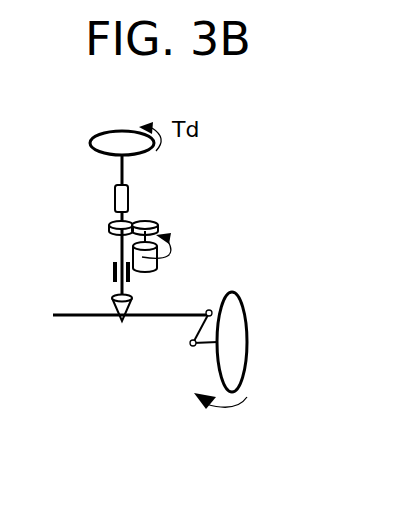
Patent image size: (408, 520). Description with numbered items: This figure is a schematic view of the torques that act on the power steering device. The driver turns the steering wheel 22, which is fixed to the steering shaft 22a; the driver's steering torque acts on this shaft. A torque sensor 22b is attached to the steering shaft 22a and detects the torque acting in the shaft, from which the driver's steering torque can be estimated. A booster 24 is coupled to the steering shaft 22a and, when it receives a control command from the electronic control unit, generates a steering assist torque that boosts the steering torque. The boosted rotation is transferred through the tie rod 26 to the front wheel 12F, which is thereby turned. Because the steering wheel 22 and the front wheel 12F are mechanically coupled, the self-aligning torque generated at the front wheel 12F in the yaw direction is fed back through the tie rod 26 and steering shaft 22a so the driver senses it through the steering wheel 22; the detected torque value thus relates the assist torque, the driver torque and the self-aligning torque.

The steering wheel 22 is at (92, 147).
The steering shaft 22a is at (124, 168).
The torque sensor 22b is at (114, 198).
The booster 24 is at (205, 253).
The tie rod 26 is at (195, 331).
The front wheel 12F is at (248, 340).